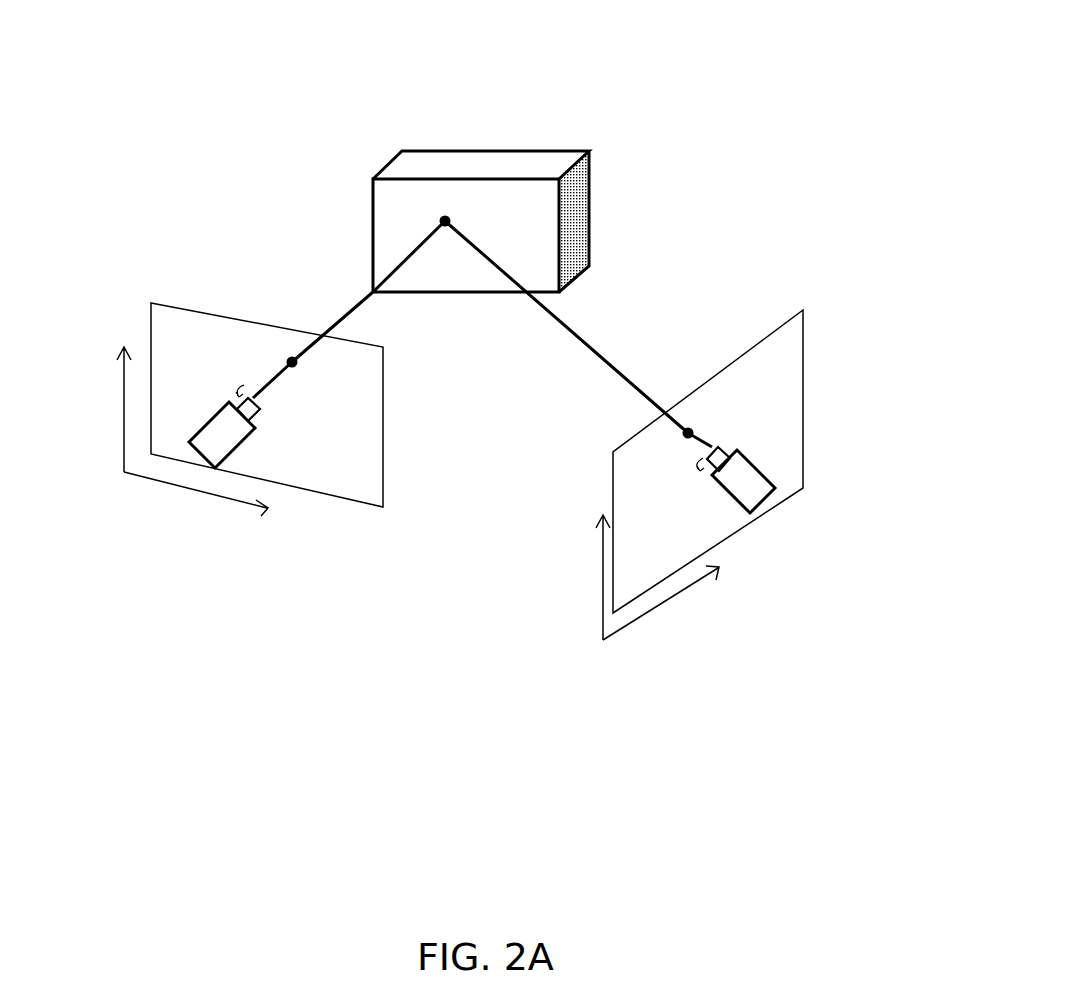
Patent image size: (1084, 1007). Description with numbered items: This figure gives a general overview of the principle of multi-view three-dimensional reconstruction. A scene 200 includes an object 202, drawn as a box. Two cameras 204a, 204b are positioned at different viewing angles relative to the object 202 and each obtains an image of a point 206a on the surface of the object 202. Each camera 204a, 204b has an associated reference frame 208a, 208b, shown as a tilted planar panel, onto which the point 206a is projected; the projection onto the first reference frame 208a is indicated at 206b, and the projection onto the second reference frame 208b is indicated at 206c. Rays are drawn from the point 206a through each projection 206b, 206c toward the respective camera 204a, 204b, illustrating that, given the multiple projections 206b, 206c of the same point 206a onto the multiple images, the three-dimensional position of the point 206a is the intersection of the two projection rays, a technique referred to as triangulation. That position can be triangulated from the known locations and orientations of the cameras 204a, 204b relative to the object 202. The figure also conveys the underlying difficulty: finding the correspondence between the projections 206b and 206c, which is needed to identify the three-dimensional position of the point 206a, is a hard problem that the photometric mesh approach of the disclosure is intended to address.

The scene 200 is at (697, 44).
The object 202 is at (495, 149).
The camera 204a is at (212, 417).
The camera 204b is at (760, 470).
The point 206a is at (445, 221).
The projection 206b is at (292, 362).
The projection 206c is at (688, 433).
The reference frame 208a is at (178, 307).
The reference frame 208b is at (803, 348).